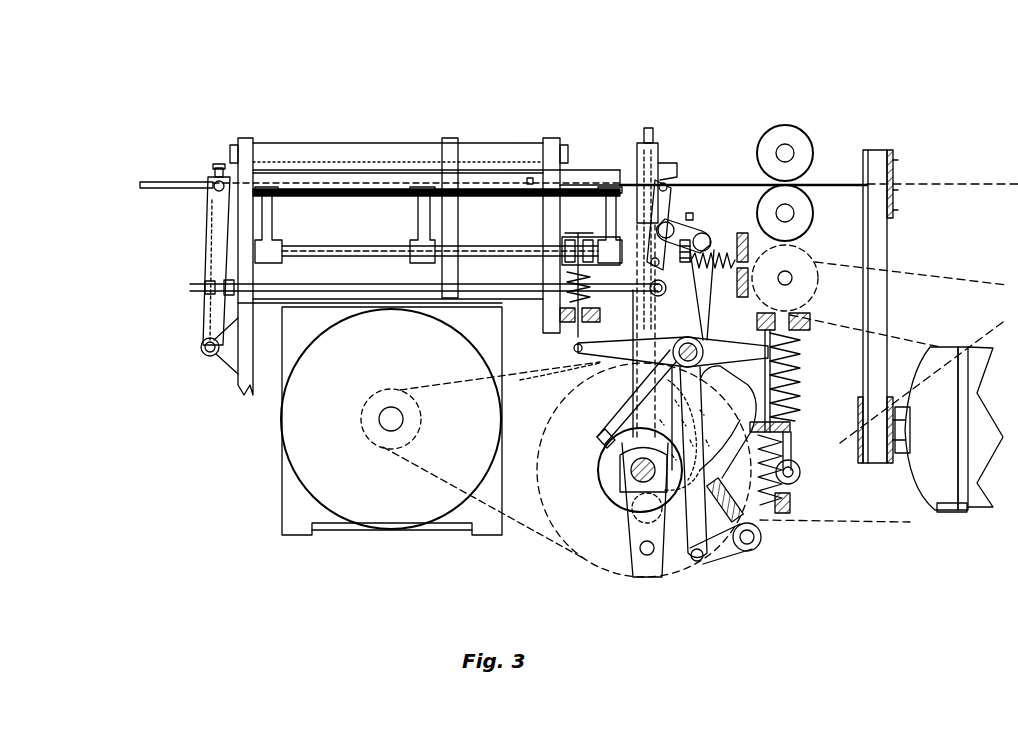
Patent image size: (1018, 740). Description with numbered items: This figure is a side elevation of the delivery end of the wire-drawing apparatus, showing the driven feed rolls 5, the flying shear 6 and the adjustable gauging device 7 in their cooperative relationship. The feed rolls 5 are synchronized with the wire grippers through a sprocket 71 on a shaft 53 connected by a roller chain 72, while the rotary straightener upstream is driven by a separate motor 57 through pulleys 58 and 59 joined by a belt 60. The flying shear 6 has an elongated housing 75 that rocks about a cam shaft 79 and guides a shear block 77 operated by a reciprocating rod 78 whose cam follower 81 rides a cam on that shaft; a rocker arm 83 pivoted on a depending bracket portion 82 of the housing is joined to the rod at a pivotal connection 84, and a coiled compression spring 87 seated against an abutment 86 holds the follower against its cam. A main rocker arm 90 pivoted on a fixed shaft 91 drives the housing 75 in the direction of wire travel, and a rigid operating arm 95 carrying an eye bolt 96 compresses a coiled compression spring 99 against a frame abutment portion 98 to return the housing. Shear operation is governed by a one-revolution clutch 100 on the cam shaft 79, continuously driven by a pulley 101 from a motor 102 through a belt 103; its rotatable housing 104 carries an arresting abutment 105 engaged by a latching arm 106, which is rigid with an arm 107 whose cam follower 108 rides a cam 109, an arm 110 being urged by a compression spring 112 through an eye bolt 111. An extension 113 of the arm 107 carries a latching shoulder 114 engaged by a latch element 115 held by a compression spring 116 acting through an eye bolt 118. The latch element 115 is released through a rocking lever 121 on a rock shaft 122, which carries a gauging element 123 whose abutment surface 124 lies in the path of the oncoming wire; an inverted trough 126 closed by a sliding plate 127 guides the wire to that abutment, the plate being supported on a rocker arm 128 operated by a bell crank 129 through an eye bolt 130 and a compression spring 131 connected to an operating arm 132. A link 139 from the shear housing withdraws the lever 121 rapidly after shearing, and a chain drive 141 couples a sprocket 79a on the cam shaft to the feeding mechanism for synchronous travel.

The feed rolls 5 is at (815, 143).
The flying shear mechanism 6 is at (670, 158).
The adjustable gauging device 7 is at (582, 158).
The shaft 53 is at (800, 278).
The motor 57 is at (935, 360).
The pulley 58 is at (893, 155).
The pulley 59 is at (866, 445).
The belt 60 is at (880, 236).
The sprocket 71 is at (815, 300).
The roller chain 72 is at (950, 275).
The housing 75 is at (596, 363).
The shear block 77 is at (649, 142).
The reciprocating rod 78 is at (636, 322).
The cam shaft 79 is at (610, 480).
The sprocket 79a is at (590, 500).
The cam follower 81 is at (625, 512).
The depending integral bracket portion 82 is at (685, 560).
The rocker arm 83 is at (718, 555).
The pivotal connection 84 is at (640, 550).
The abutment 86 is at (752, 398).
The coiled compression spring 87 is at (721, 505).
The main rocker arm 90 is at (750, 345).
The shaft 91 is at (703, 352).
The rigid operating arm 95 is at (728, 447).
The eye bolt 96 is at (785, 440).
The abutment portion 98 is at (790, 330).
The coiled compression spring 99 is at (798, 355).
The one revolution clutch 100 is at (625, 500).
The pulley 101 is at (610, 575).
The motor 102 is at (475, 362).
The belt 103 is at (512, 545).
The rotatable housing 104 is at (605, 458).
The arresting abutment 105 is at (598, 439).
The latching arm 106 is at (620, 410).
The arm 107 is at (700, 388).
The cam follower 108 is at (687, 493).
The cam 109 is at (620, 473).
The arm 110 is at (758, 335).
The eye bolt 111 is at (764, 405).
The compression spring 112 is at (790, 497).
The extension 113 is at (648, 284).
The latching shoulder 114 is at (697, 240).
The latch element 115 is at (695, 222).
The compression spring 116 is at (718, 272).
The eye bolt 118 is at (762, 262).
The rocking lever 121 is at (212, 228).
The rock shaft 122 is at (203, 352).
The gauging element 123 is at (190, 190).
The abutment surface 124 is at (413, 182).
The inverted trough 126 is at (585, 178).
The sliding plate 127 is at (518, 197).
The rocker arm 128 is at (607, 210).
The bell crank 129 is at (598, 236).
The eye bolt 130 is at (572, 352).
The compression spring 131 is at (565, 280).
The operating arm 132 is at (586, 370).
The link 139 is at (338, 285).
The chain drive 141 is at (888, 526).